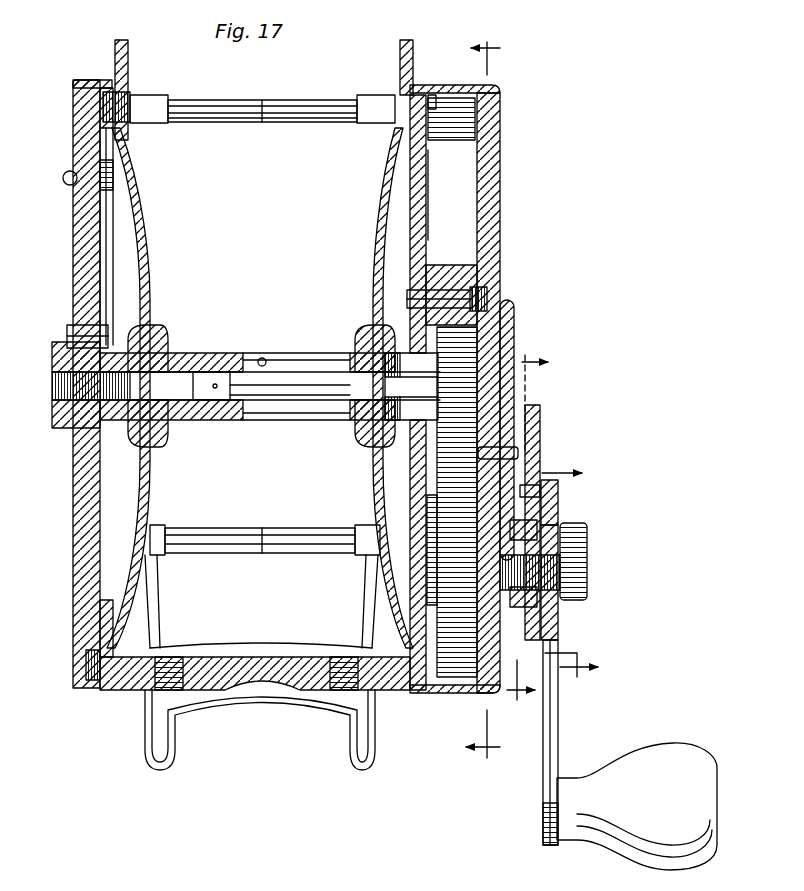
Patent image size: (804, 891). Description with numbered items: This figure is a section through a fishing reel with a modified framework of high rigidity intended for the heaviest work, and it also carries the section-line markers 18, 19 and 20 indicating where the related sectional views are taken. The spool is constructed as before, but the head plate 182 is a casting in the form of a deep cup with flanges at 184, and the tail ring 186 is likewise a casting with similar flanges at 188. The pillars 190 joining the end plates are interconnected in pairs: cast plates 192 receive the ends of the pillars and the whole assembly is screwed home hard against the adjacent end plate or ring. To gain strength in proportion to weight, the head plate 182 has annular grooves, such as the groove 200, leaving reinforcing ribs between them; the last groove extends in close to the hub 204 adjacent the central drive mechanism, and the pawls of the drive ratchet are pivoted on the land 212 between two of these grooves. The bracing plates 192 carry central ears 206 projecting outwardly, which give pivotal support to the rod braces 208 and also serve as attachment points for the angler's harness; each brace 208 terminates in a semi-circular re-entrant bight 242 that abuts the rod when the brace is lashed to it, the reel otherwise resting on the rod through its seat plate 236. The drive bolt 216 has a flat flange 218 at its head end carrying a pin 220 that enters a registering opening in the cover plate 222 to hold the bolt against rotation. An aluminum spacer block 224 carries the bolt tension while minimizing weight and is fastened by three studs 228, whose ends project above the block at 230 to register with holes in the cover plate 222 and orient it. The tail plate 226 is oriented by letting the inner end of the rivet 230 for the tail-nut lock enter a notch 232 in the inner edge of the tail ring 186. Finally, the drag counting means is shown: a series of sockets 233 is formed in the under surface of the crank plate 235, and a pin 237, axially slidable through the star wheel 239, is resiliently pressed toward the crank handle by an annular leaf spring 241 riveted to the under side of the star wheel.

The head plate 182 is at (400, 163).
The flanges 184 is at (456, 86).
The tail ring 186 is at (100, 138).
The flanges 188 is at (95, 82).
The pillars 190 is at (258, 108).
The cast plates 192 is at (132, 96).
The groove 200 is at (426, 182).
The hub 204 is at (420, 355).
The central ears 206 is at (130, 48).
The rod braces 208 is at (152, 603).
The land 212 is at (428, 212).
The bolt 216 is at (492, 378).
The flat flange 218 is at (512, 325).
The pin 220 is at (514, 448).
The cover plate 222 is at (503, 140).
The aluminum spacer block 224 is at (445, 265).
The tail plate 226 is at (86, 255).
The studs 228 is at (117, 178).
The rivet 230 is at (75, 185).
The notch 232 is at (115, 165).
The sockets 233 is at (560, 505).
The crank plate 235 is at (552, 740).
The seat plate 236 is at (388, 697).
The pin 237 is at (560, 492).
The star wheel 239 is at (541, 443).
The annular leaf spring 241 is at (530, 618).
The semi-circular re-entrant bight 242 is at (262, 712).
The section line 18- 18 is at (484, 398).
The section line 19- 19 is at (527, 528).
The section line 20- 20 is at (570, 574).